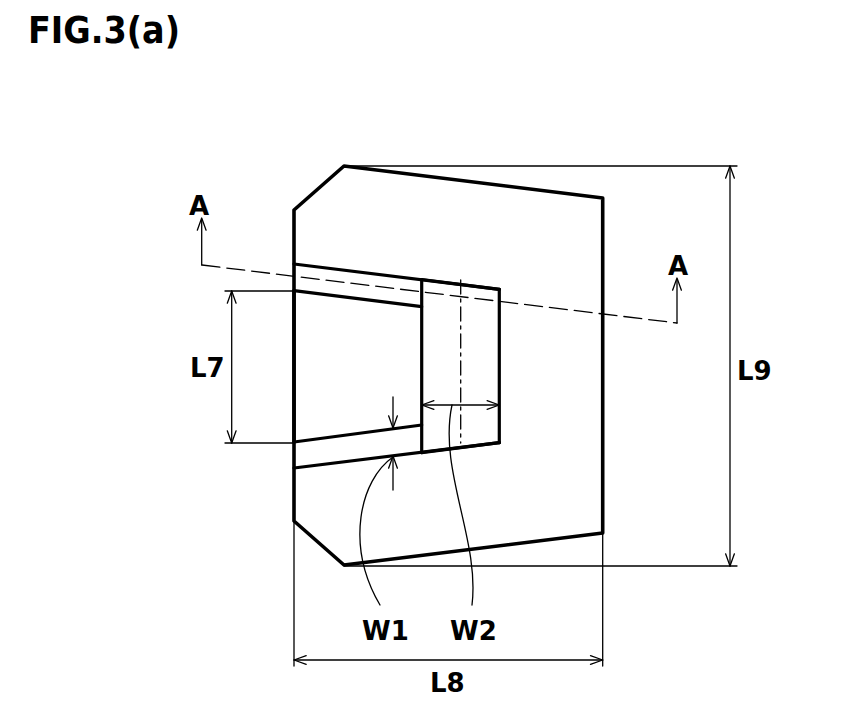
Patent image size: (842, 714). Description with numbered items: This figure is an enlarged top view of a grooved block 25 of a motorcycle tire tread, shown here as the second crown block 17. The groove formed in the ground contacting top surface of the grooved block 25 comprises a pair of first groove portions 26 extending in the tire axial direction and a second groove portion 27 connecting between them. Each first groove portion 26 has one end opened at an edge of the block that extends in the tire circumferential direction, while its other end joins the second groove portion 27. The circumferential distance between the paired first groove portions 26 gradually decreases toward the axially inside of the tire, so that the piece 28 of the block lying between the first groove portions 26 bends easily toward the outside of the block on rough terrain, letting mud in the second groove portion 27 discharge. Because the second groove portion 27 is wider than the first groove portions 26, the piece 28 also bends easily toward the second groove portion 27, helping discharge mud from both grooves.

The second crown block 17 is at (448, 325).
The grooved block 25 is at (399, 252).
The first groove portions 26 is at (356, 277).
The second groove portion 27 is at (477, 374).
The piece 28 is at (327, 333).